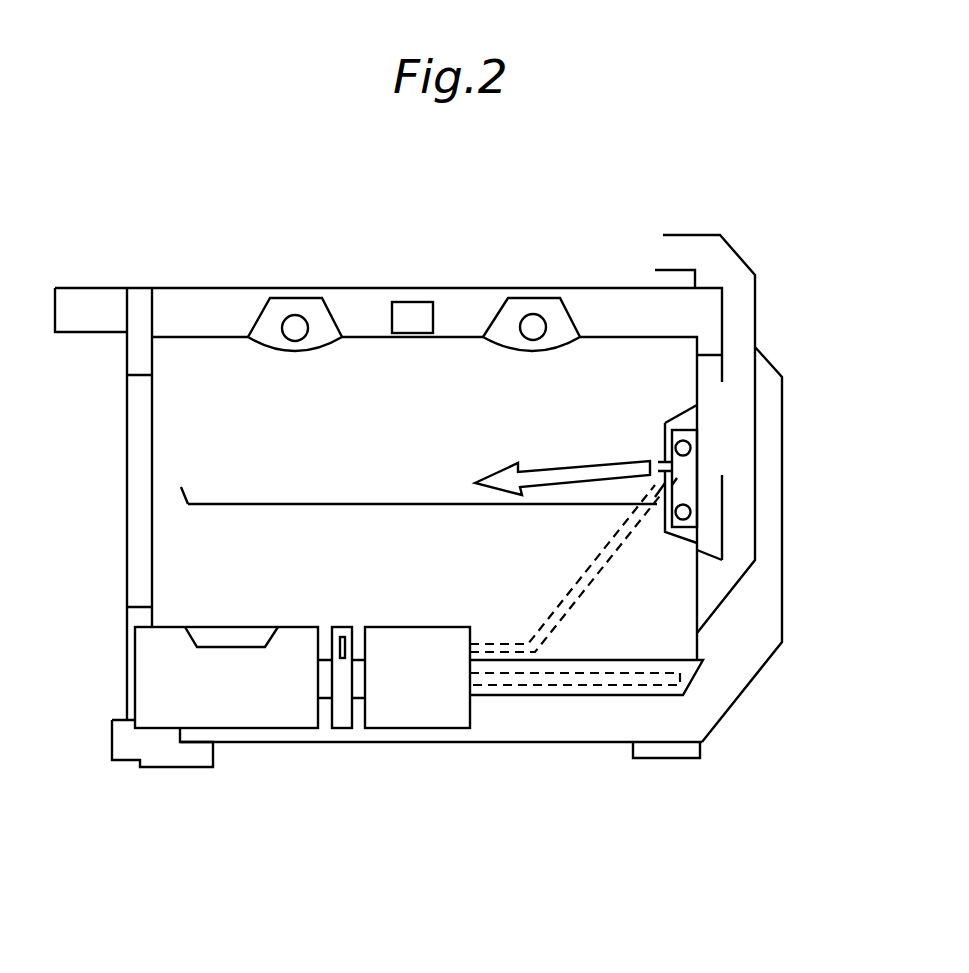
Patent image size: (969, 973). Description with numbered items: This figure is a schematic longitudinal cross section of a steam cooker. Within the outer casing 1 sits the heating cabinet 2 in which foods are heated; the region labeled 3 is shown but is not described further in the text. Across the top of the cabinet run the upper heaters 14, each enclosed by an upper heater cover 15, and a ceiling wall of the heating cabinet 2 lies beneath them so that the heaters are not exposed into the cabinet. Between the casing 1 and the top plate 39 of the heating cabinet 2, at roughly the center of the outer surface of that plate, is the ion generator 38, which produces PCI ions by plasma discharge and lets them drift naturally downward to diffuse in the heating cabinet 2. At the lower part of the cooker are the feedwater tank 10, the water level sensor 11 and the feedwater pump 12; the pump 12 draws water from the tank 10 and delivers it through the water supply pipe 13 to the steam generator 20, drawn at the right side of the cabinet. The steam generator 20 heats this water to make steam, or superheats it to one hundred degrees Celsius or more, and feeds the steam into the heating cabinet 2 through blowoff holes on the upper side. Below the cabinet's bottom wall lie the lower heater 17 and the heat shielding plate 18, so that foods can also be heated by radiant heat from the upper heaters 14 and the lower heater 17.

The casing 1 is at (235, 287).
The heating cabinet 2 is at (232, 339).
The cover 3 is at (88, 303).
The top plate 39 is at (180, 333).
The upper heaters 14 is at (293, 327).
The upper heater covers 15 is at (317, 297).
The ion generator 38 is at (412, 317).
The steam generator 20 is at (676, 467).
The feedwater tank 10 is at (253, 713).
The water level sensor 11 is at (342, 713).
The feedwater pump 12 is at (407, 713).
The water supply pipe 13 is at (502, 663).
The lower heater 17 is at (598, 687).
The heat shielding plate 18 is at (548, 698).